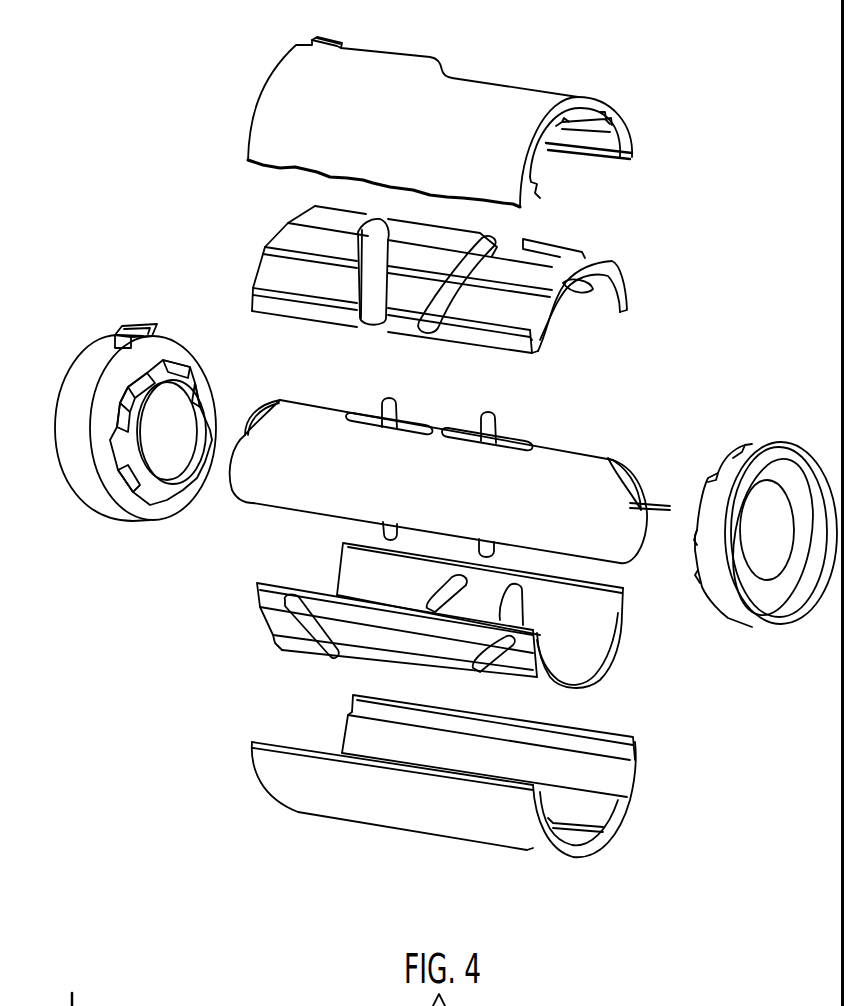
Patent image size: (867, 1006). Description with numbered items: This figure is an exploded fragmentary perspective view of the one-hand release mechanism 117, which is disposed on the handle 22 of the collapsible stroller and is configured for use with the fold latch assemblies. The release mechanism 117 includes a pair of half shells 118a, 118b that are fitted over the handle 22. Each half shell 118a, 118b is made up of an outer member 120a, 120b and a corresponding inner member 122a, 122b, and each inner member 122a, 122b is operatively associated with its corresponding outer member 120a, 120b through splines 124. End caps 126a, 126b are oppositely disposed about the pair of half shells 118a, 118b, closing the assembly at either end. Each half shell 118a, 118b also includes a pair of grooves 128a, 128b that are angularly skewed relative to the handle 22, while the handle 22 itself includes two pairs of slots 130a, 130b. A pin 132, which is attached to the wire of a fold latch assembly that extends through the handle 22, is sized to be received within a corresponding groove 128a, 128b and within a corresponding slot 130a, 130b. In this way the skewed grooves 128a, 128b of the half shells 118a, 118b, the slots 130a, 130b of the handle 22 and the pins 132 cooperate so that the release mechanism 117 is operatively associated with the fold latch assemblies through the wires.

The one-hand release mechanism 117 is at (225, 81).
The half shell 118a is at (680, 213).
The half shell 118b is at (665, 743).
The outer member 120a is at (482, 108).
The outer member 120b is at (413, 817).
The inner member 122a is at (481, 279).
The inner member 122b is at (620, 638).
The splines 124 is at (582, 110).
The end cap 126a is at (83, 377).
The end cap 126b is at (752, 452).
The groove 128a is at (355, 320).
The groove 128b is at (427, 333).
The slot 130a is at (367, 420).
The slot 130b is at (458, 425).
The pin 132 is at (493, 423).
The handle 22 is at (268, 495).